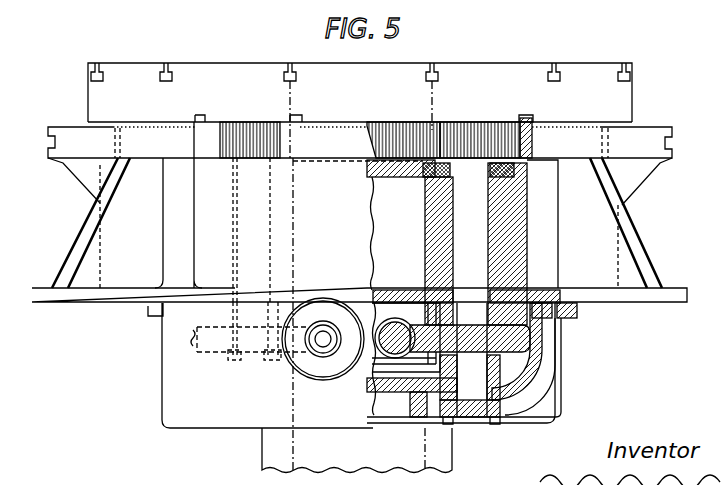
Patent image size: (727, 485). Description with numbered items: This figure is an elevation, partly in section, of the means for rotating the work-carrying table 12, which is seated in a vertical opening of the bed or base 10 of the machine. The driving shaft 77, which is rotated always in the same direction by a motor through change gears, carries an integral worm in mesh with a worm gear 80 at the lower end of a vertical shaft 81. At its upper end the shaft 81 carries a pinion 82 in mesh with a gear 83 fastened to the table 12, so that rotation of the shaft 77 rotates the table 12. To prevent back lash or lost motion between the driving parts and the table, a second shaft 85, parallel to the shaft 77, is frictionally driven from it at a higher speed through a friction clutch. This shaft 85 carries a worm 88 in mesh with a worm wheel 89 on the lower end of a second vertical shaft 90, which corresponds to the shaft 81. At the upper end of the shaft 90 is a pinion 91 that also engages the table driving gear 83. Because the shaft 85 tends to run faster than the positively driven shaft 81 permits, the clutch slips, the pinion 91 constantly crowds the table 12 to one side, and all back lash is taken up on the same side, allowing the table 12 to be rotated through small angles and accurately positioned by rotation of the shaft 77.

The bed or base 10 is at (643, 170).
The work-carrying table 12 is at (620, 99).
The driving shaft 77 is at (315, 350).
The worm gear 80 is at (193, 338).
The vertical shaft 81 is at (240, 232).
The pinion 82 is at (228, 137).
The gear 83 is at (398, 136).
The shaft 85 is at (373, 352).
The worm 88 is at (388, 316).
The worm wheel 89 is at (513, 340).
The shaft 90 is at (480, 248).
The pinion 91 is at (464, 138).